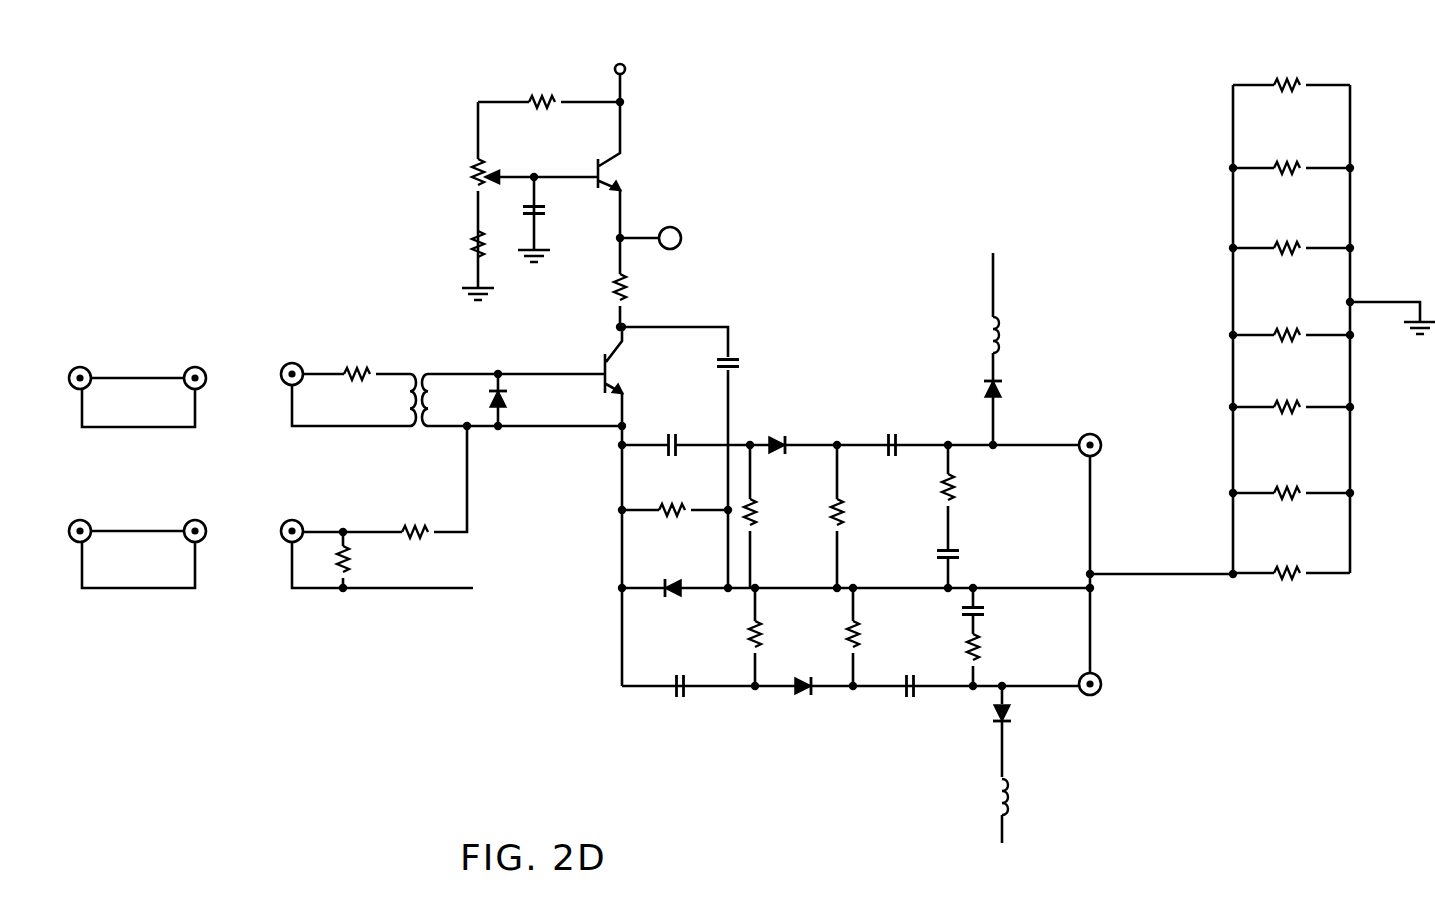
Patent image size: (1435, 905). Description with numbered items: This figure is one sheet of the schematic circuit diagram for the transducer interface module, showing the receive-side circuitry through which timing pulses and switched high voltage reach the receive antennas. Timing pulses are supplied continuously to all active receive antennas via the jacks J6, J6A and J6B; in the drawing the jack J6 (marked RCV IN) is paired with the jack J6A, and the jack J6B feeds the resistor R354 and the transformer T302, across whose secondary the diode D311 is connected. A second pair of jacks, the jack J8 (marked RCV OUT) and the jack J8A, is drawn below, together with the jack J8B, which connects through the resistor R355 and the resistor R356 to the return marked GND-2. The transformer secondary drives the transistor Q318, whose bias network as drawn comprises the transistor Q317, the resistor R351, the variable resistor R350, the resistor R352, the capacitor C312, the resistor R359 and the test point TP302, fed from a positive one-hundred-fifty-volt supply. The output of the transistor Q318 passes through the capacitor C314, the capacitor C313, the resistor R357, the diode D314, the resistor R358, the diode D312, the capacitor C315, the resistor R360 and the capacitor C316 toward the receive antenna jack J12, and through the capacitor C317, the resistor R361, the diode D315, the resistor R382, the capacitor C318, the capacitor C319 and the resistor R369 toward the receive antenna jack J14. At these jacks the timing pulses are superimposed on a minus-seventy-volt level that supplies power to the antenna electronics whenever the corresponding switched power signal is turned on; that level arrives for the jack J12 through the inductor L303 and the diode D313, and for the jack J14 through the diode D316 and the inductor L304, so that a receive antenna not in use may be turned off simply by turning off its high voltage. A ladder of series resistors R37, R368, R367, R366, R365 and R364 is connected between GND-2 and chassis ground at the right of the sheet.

The resistor 249K R351 is at (561, 86).
The potentiometer 100K R350 is at (500, 165).
The resistor 147K R352 is at (445, 264).
The capacitor 0.01 C312 is at (561, 217).
The transistor Q317 is at (642, 170).
The test point TP302 is at (705, 225).
The resistor R359 is at (753, 415).
The capacitor 220PF C314 is at (711, 459).
The transistor Q318 is at (588, 376).
The capacitor 220PF C313 is at (686, 441).
The resistor 10K R357 is at (677, 507).
The diode D314 is at (856, 569).
The resistor 1.5K R358 is at (775, 514).
The diode D312 is at (914, 431).
The capacitor 220PF C315 is at (891, 441).
The resistor 51 R360 is at (975, 495).
The capacitor 0.01 C316 is at (973, 562).
The inductor L303 is at (998, 339).
The diode D313 is at (1020, 383).
The receive antenna jack J12 is at (1111, 548).
The ground 2 GND-2 is at (1163, 557).
The capacitor 220PF C317 is at (850, 684).
The resistor 1.5K R361 is at (781, 637).
The diode D315 is at (798, 671).
The resistor 20K R382 is at (880, 637).
The capacitor 220PF C318 is at (903, 686).
The capacitor 0.01 C319 is at (999, 610).
The resistor 51 R369 is at (1160, 414).
The receive antenna jack J14 is at (1109, 685).
The diode D316 is at (1028, 729).
The inductor L304 is at (1053, 811).
The resistor 51 R37 is at (1291, 88).
The resistor 51 R368 is at (1291, 252).
The resistor 51 R367 is at (1332, 333).
The resistor 51 R366 is at (1291, 412).
The resistor 51 R365 is at (1291, 498).
The resistor 51 R364 is at (1291, 578).
The jack J6 is at (128, 372).
The jack J6A is at (186, 362).
The connector RCV OUT J8 is at (128, 530).
The connector J8A is at (188, 519).
The jack J6B is at (340, 374).
The resistor 27 R354 is at (356, 372).
The transformer T302 is at (516, 384).
The diode D311 is at (523, 400).
The connector J8B is at (376, 531).
The resistor 1K R355 is at (385, 495).
The resistor 51 R356 is at (342, 586).